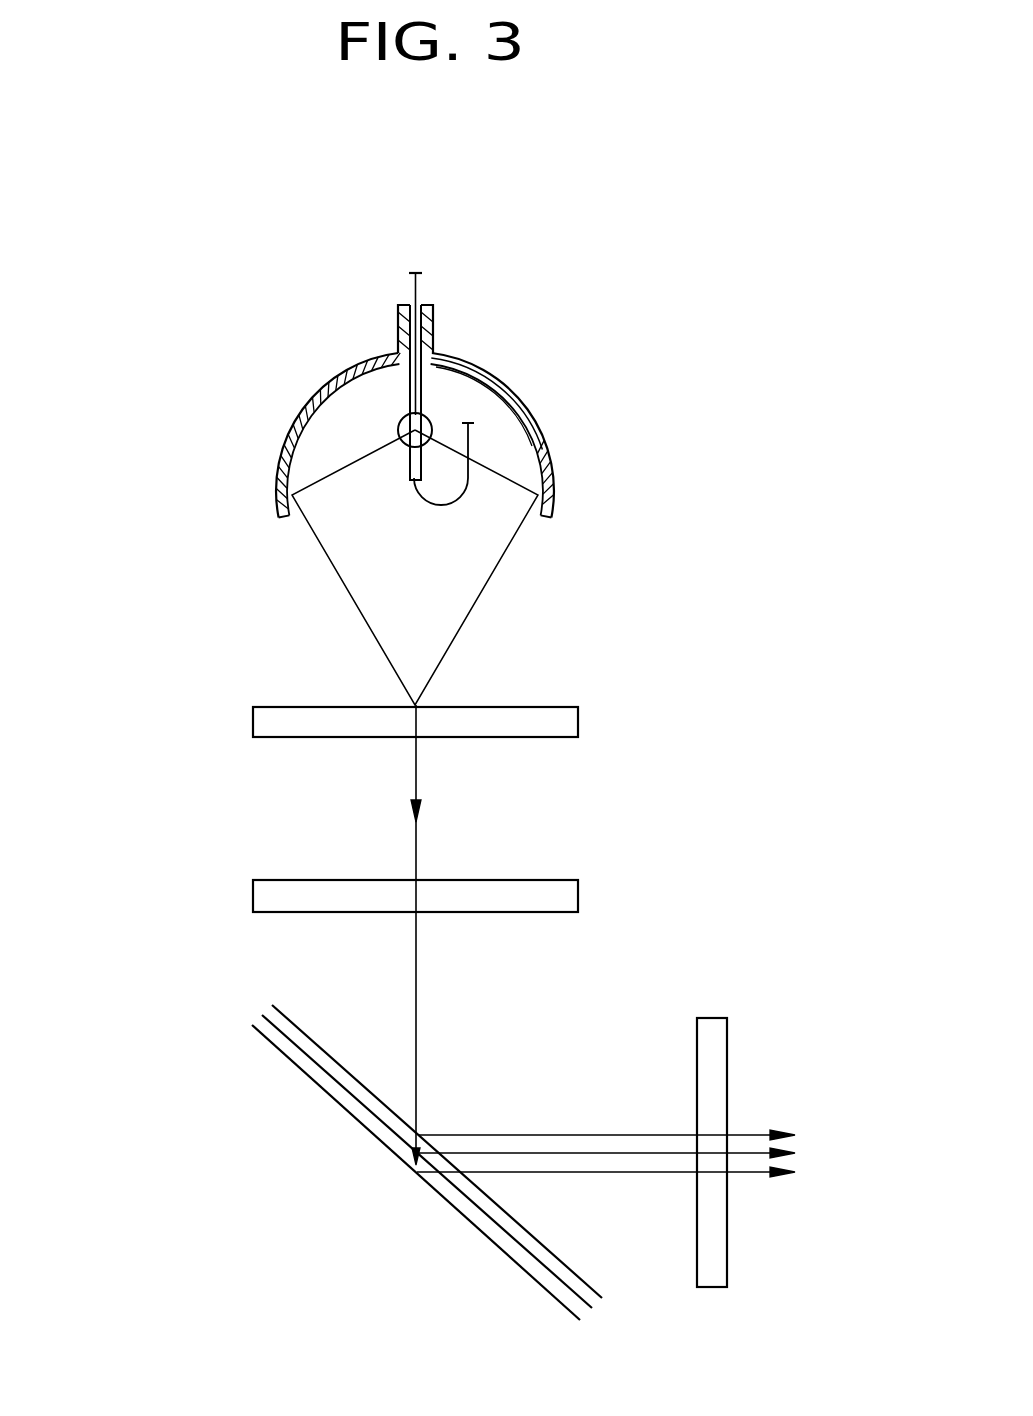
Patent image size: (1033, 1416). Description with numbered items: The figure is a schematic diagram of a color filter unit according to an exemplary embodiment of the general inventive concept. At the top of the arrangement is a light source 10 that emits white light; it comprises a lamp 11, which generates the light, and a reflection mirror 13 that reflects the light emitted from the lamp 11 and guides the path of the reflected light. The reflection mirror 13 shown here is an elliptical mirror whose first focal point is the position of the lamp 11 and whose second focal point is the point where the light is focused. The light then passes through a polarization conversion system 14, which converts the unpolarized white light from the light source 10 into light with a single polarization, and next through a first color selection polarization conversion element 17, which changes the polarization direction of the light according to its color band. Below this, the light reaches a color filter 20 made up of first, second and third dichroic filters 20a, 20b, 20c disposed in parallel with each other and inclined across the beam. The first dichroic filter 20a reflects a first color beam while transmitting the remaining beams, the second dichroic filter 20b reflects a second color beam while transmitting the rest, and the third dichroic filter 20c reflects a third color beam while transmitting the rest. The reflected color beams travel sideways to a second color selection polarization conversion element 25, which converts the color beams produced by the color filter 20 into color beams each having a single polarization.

The light source 10 is at (566, 441).
The lamp 11 is at (398, 428).
The reflection mirror 13 is at (487, 382).
The polarization conversion system 14 is at (253, 720).
The first color selection polarization conversion element 17 is at (253, 893).
The color filter 20 is at (132, 1090).
The first dichroic filter 20a is at (309, 1040).
The second dichroic filter 20b is at (340, 1088).
The third dichroic filter 20c is at (372, 1134).
The second color selection polarization conversion element 25 is at (713, 1018).